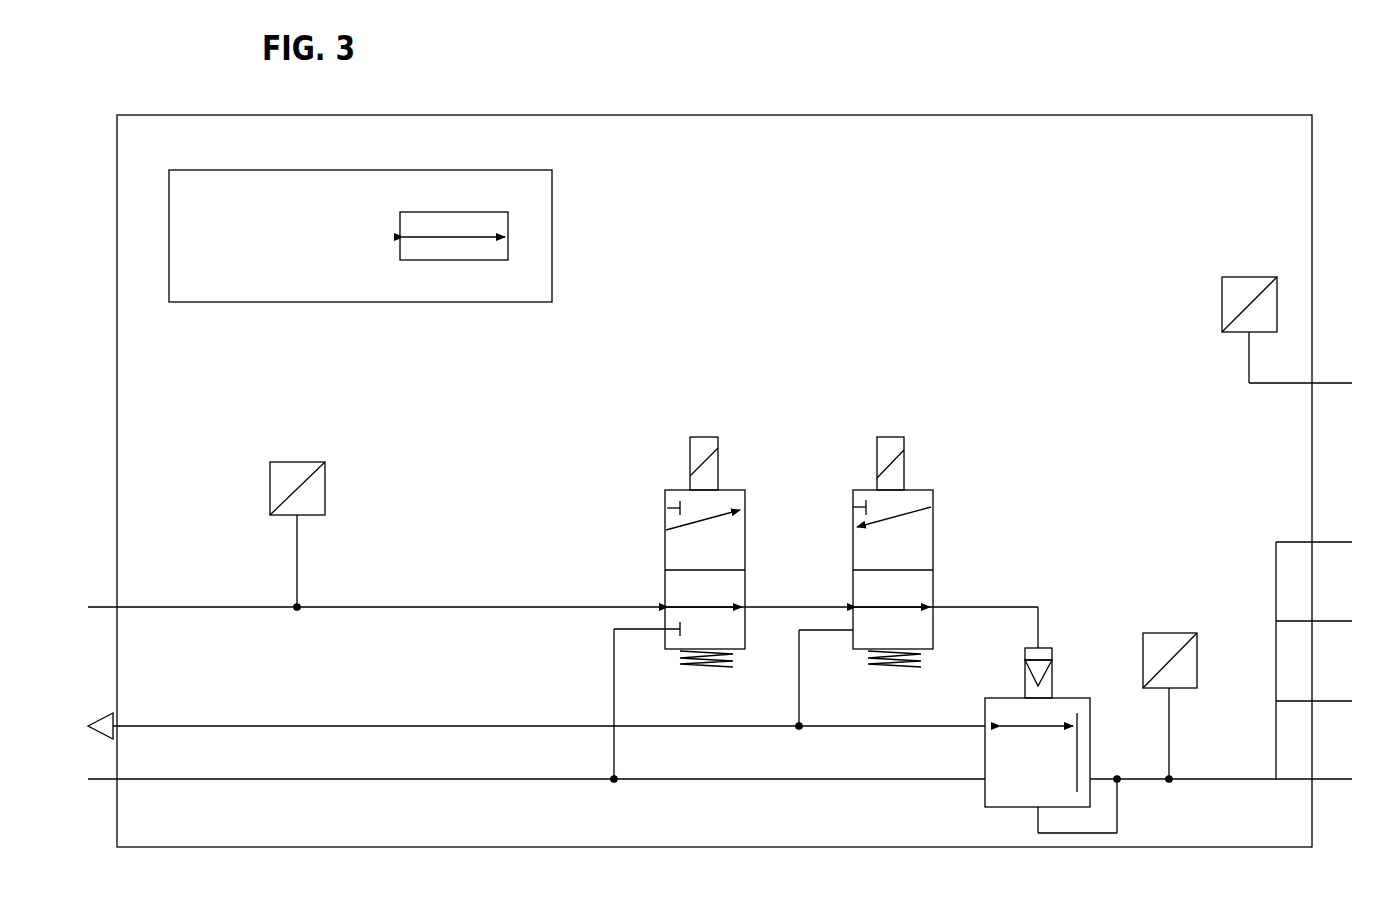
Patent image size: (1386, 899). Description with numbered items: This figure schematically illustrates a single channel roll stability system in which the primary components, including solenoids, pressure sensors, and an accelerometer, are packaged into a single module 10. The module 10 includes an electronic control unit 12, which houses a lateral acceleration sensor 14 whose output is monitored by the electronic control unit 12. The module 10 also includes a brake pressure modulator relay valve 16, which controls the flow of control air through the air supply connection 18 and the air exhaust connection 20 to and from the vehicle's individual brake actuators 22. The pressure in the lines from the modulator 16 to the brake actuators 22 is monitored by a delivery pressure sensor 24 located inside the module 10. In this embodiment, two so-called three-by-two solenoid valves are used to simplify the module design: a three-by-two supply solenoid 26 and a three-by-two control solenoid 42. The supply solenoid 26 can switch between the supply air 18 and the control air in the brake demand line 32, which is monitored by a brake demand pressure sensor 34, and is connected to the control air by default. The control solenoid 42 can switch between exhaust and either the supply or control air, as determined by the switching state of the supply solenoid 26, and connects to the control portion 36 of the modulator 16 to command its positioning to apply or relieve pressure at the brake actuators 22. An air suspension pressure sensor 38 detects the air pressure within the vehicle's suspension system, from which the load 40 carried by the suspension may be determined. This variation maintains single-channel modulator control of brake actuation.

The module 10 is at (714, 457).
The electronic control unit 12 is at (360, 261).
The lateral acceleration sensor 14 is at (437, 236).
The brake pressure modulator relay valve 16 is at (1037, 752).
The air supply connection 18 is at (699, 727).
The air exhaust connection 20 is at (516, 684).
The brake actuators 22 is at (1331, 660).
The delivery pressure sensor 24 is at (1170, 683).
The supply solenoid 26 is at (705, 527).
The brake demand line 32 is at (542, 622).
The brake demand pressure sensor 34 is at (297, 510).
The control portion 36 is at (1058, 673).
The air suspension pressure sensor 38 is at (1243, 279).
The load 40 is at (1317, 362).
The control solenoid 42 is at (893, 527).